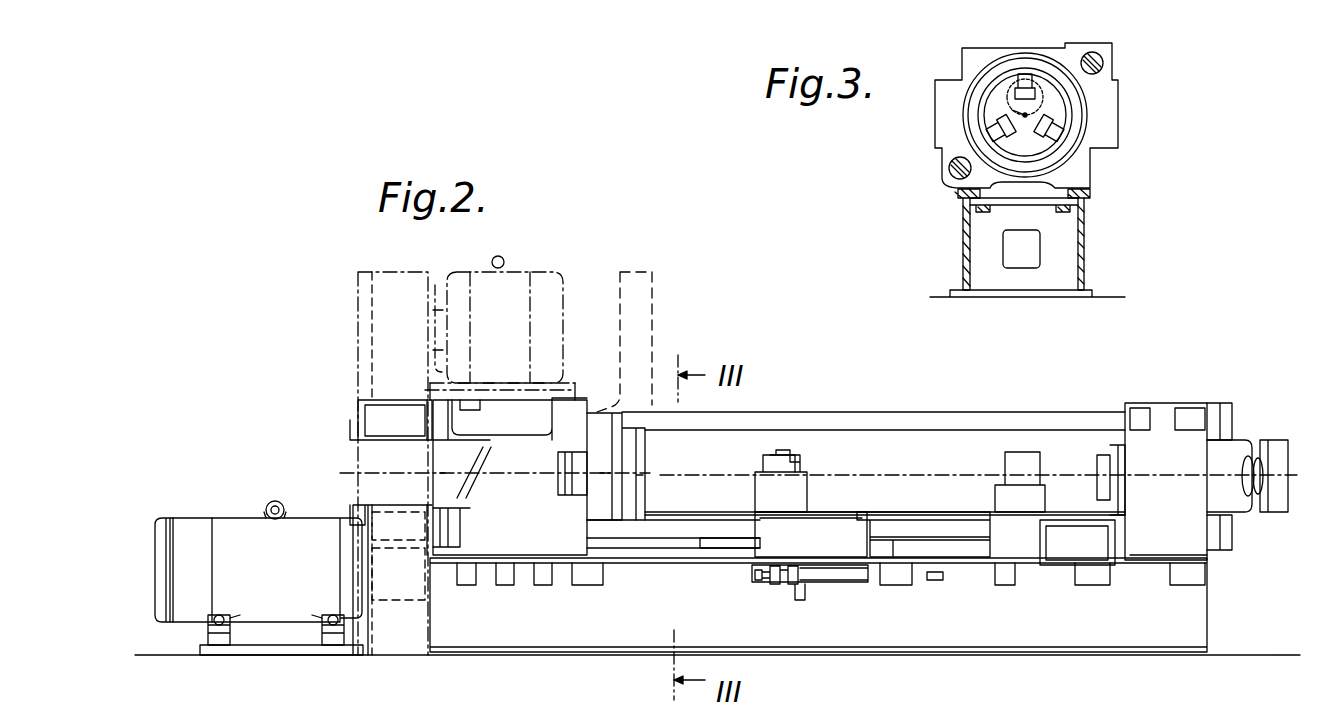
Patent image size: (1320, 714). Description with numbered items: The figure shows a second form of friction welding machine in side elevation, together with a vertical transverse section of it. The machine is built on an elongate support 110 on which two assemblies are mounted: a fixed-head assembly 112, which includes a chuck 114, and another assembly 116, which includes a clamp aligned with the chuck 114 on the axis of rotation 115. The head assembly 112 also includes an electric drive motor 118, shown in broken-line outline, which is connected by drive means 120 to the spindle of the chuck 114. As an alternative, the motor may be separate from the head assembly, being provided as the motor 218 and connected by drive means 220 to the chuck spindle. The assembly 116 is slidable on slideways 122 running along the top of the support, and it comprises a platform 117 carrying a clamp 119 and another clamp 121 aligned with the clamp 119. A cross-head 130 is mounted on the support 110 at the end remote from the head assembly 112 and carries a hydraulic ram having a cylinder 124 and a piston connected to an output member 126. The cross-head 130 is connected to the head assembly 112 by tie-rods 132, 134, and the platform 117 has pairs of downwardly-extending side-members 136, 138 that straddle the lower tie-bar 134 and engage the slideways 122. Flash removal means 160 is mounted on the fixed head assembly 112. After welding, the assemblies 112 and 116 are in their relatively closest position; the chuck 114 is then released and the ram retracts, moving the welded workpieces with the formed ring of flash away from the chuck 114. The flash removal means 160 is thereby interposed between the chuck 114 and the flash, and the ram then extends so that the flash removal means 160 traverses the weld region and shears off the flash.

In FIG. 2, the elongate support 110 is at (930, 635).
In FIG. 2, the fixed-head assembly 112 is at (540, 474).
In FIG. 3, the fixed-head assembly 112 is at (975, 58).
In FIG. 2, the chuck 114 is at (600, 495).
In FIG. 3, the chuck 114 is at (1060, 112).
In FIG. 2, the axis of rotation 115 is at (678, 486).
In FIG. 3, the axis of rotation 115 is at (1022, 114).
In FIG. 2, the assembly 116 is at (990, 496).
In FIG. 2, the platform 117 is at (963, 517).
In FIG. 2, the electric drive motor 118 is at (515, 305).
In FIG. 2, the clamp 119 is at (785, 462).
In FIG. 2, the drive means 120 is at (378, 345).
In FIG. 2, the clamp 121 is at (1022, 458).
In FIG. 2, the slideways 122 is at (727, 550).
In FIG. 3, the slideways 122 is at (965, 200).
In FIG. 2, the cylinder 124 is at (1240, 455).
In FIG. 2, the output member 126 is at (1097, 458).
In FIG. 2, the cross-head 130 is at (1162, 455).
In FIG. 2, the tie-rod 132 is at (948, 418).
In FIG. 3, the tie-rod 132 is at (1103, 68).
In FIG. 2, the tie-rod 134 is at (745, 528).
In FIG. 3, the tie-rod 134 is at (960, 186).
In FIG. 2, the side-members 136 is at (825, 550).
In FIG. 2, the side-members 138 is at (1020, 550).
In FIG. 2, the flash removal means 160 is at (640, 345).
In FIG. 2, the motor 218 is at (190, 520).
In FIG. 2, the drive means 220 is at (365, 518).